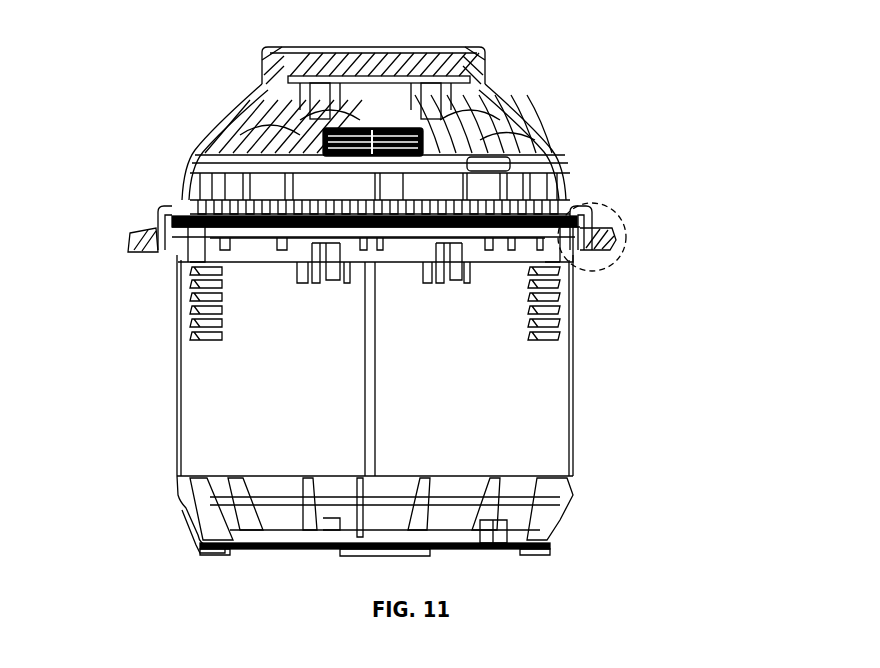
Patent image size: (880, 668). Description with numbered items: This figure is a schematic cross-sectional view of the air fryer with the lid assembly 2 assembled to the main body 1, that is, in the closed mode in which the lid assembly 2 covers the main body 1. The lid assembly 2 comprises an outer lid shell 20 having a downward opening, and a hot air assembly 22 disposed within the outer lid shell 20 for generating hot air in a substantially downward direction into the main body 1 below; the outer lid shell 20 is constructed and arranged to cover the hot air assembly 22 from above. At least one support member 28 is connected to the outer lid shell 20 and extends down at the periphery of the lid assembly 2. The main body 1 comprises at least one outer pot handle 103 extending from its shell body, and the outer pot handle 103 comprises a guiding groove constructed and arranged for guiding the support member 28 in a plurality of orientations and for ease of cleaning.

The main body 1 is at (207, 420).
The lid assembly 2 is at (429, 165).
The outer lid shell 20 is at (230, 138).
The hot air assembly 22 is at (370, 142).
The support member 28 is at (578, 212).
The outer pot handle 103 is at (610, 250).